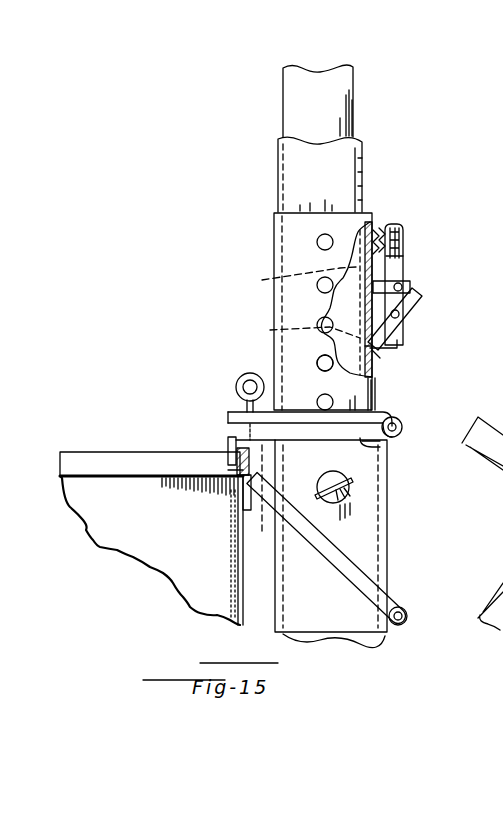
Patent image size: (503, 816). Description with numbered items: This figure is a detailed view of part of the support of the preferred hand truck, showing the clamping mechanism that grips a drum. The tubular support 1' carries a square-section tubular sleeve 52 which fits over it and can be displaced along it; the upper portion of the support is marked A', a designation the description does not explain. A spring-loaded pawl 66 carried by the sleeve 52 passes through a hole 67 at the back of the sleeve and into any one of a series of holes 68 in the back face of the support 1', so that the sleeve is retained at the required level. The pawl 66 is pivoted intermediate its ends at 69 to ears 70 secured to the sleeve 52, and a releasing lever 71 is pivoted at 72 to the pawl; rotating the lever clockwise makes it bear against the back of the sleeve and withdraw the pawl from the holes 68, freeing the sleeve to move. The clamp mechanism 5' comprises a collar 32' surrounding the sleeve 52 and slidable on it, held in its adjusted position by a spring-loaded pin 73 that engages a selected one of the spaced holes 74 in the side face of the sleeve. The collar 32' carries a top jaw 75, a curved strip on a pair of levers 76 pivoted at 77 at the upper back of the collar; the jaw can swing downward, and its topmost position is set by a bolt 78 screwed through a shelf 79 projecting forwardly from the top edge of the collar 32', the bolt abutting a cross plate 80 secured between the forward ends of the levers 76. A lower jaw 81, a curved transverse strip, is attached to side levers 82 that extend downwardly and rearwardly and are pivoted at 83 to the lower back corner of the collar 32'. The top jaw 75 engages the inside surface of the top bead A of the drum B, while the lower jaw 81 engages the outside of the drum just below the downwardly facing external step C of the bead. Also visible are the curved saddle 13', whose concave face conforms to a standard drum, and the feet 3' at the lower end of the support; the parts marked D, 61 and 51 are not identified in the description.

The upper tubular member A' is at (346, 101).
The support 1' is at (350, 168).
The tubular sleeve 52 is at (295, 243).
The holes 68 is at (275, 288).
The spaced holes 74 is at (325, 356).
The spring-loaded pawl 66 is at (406, 264).
The ears 70 is at (405, 272).
The pawl pivot 69 is at (410, 286).
The releasing lever 71 is at (420, 298).
The releasing lever pivot 72 is at (400, 318).
The hole 67 is at (385, 350).
The bolt 78 is at (236, 386).
The shelf 79 is at (228, 417).
The lever pivot 77 is at (399, 420).
The levers 76 is at (382, 446).
The collar 32' is at (341, 536).
The spring-loaded pin 73 is at (352, 488).
The side levers 82 is at (347, 582).
The side lever pivot 83 is at (407, 620).
The cross plate 80 is at (262, 503).
The top bead A is at (150, 446).
The panel edge D is at (133, 474).
The drum B is at (85, 527).
The external step C is at (232, 470).
The clamp mechanism 5' is at (206, 442).
The top jaw 75 is at (228, 455).
The lower jaw 81 is at (240, 490).
The curved saddle 13' is at (482, 455).
The adjacent figure member 61 is at (502, 554).
The adjacent figure member 51 is at (492, 596).
The feet 3' is at (495, 661).